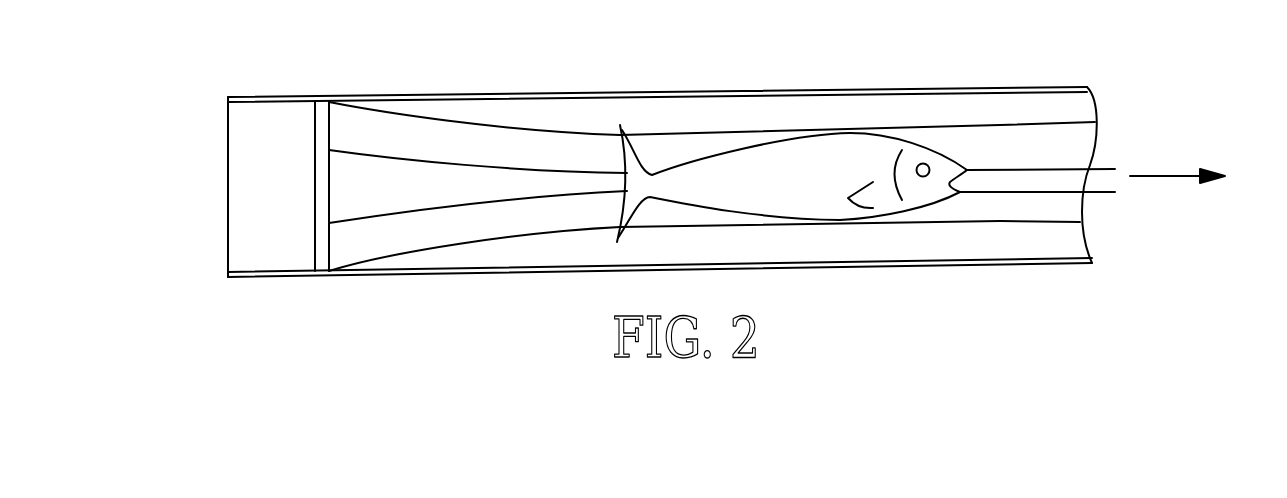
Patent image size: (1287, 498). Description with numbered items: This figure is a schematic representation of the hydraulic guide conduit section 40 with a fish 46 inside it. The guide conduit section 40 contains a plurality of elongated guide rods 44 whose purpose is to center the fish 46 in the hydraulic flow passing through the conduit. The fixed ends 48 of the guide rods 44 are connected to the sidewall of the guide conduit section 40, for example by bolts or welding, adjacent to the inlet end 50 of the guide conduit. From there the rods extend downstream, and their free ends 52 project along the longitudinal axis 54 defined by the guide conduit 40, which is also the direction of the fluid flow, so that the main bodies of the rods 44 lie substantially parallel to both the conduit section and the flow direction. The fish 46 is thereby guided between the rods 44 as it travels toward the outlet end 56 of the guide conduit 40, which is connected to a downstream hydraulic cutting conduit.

The hydraulic guide conduit section 40 is at (747, 92).
The elongated guide rods 44 is at (385, 162).
The fish 46 is at (863, 147).
The fixed ends 48 is at (329, 150).
The inlet end 50 is at (228, 162).
The free ends 52 is at (1095, 122).
The longitudinal axis 54 is at (1182, 173).
The outlet end 56 is at (1093, 102).